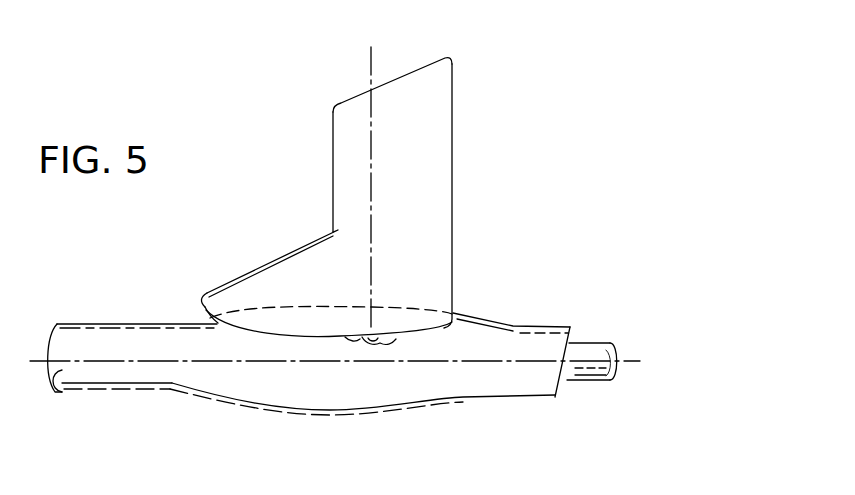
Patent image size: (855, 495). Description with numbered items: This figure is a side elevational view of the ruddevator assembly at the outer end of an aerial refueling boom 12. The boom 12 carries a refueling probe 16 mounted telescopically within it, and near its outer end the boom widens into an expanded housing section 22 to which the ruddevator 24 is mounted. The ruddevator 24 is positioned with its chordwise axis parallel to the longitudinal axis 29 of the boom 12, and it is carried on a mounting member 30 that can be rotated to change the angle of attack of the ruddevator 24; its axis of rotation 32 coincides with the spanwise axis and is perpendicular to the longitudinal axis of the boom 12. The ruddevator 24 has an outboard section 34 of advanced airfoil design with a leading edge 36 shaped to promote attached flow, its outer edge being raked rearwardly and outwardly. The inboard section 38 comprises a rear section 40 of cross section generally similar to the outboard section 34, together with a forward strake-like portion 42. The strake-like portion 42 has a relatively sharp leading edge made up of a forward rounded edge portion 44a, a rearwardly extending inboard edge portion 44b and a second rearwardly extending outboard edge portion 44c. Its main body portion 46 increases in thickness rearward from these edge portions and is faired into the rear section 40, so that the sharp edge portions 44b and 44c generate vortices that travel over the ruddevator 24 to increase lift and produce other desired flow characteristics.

The boom 12 is at (147, 378).
The refueling probe 16 is at (587, 381).
The expanded housing section 22 is at (332, 395).
The ruddevator 24 is at (369, 168).
The longitudinal axis of the boom 29 is at (528, 362).
The mounting member 30 is at (378, 343).
The axis of rotation 32 is at (371, 64).
The outboard section 34 is at (417, 85).
The leading edge 36 is at (333, 170).
The inboard section 38 is at (452, 272).
The rear section 40 is at (428, 292).
The strake-like portion 42 is at (237, 259).
The forward rounded edge portion 44a is at (204, 303).
The inboard edge portion 44b is at (257, 331).
The outboard edge portion 44c is at (278, 262).
The main body portion 46 is at (270, 295).